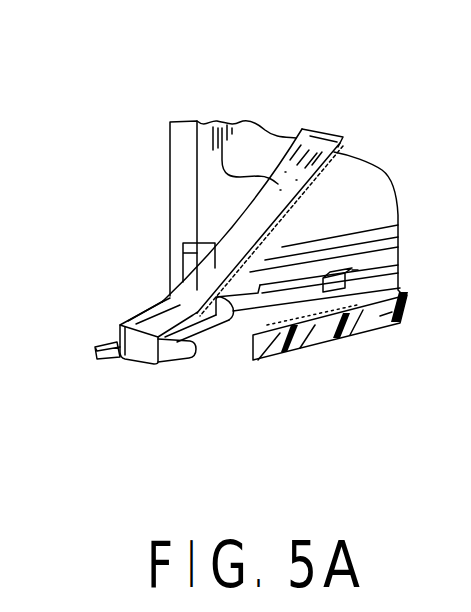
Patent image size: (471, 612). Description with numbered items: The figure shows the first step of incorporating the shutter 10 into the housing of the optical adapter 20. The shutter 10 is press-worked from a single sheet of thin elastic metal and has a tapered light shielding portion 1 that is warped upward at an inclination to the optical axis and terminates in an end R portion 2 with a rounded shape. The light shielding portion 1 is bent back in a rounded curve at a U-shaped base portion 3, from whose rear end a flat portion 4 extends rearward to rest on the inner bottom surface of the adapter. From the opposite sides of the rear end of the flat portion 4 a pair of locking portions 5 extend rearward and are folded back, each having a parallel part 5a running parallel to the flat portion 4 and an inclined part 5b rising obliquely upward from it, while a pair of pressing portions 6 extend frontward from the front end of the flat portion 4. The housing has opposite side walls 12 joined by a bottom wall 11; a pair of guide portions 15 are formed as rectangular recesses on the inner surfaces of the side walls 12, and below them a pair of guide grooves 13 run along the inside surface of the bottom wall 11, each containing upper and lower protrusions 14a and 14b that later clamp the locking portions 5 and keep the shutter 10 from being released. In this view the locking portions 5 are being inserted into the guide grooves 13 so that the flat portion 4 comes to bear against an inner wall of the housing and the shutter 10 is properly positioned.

The light shielding portion 1 is at (244, 248).
The end R portion 2 is at (322, 128).
The base portion 3 is at (117, 325).
The flat portion 4 is at (187, 360).
The locking portions 5 is at (240, 297).
The parallel part 5a is at (222, 330).
The inclined part 5b is at (158, 303).
The pressing portions 6 is at (105, 360).
The shutter 10 is at (325, 185).
The bottom wall 11 is at (307, 367).
The side walls 12 is at (170, 210).
The guide grooves 13 is at (320, 285).
The protrusion 14a is at (290, 285).
The protrusion 14b is at (357, 285).
The guide portions 15 is at (170, 273).
The optical adapter 20 is at (395, 337).